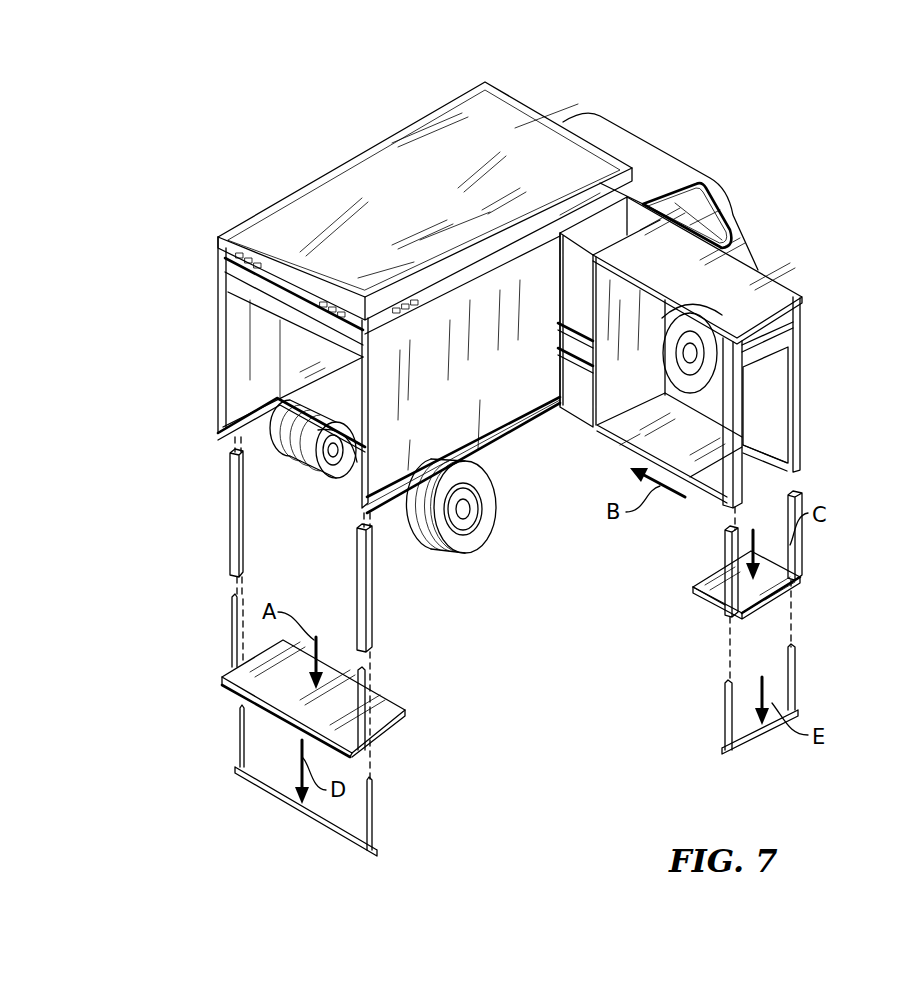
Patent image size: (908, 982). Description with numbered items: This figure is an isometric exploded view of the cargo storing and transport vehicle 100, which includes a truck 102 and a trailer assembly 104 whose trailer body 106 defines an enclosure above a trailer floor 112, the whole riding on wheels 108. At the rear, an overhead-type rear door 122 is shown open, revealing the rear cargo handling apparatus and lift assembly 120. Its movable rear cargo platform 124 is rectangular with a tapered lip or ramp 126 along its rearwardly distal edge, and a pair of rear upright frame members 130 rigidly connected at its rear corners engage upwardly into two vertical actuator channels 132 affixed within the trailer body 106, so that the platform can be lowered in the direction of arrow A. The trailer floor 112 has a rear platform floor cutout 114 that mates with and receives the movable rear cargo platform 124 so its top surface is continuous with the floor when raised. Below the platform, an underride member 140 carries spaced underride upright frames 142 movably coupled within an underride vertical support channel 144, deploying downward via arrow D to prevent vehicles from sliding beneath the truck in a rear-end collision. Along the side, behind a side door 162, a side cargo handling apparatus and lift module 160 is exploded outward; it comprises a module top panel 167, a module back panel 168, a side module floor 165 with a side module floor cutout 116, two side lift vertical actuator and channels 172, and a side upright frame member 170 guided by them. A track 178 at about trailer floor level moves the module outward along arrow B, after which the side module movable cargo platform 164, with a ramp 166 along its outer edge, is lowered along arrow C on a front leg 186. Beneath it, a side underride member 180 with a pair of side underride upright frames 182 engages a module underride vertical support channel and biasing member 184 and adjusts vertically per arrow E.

The cargo storing and transport vehicle 100 is at (752, 126).
The truck 102 is at (642, 150).
The trailer assembly 104 is at (213, 208).
The trailer body 106 is at (385, 182).
The wheel 108 is at (485, 520).
The trailer floor 112 is at (326, 392).
The rear platform floor cutout 114 is at (245, 421).
The side module floor cutout 116 is at (565, 342).
The rear cargo handling apparatus and lift assembly 120 is at (232, 686).
The rear door 122 is at (250, 300).
The movable rear cargo platform 124 is at (382, 697).
The tapered lip or ramp 126 is at (240, 702).
The rear upright frame members 130 is at (232, 630).
The vertical actuator channels 132 is at (231, 497).
The underride member 140 is at (287, 800).
The underride upright frames 142 is at (238, 758).
The underride vertical support channel 144 is at (245, 497).
The side cargo handling apparatus and lift module 160 is at (782, 597).
The side door 162 is at (798, 338).
The side module movable cargo platform 164 is at (720, 566).
The side module floor 165 is at (672, 437).
The ramp 166 is at (792, 635).
The module top panel 167 is at (760, 282).
The module back panel 168 is at (610, 373).
The side upright frame member 170 is at (800, 546).
The side lift vertical actuator and channels 172 is at (800, 405).
The track 178 is at (565, 317).
The side underride member 180 is at (730, 745).
The side underride upright frames 182 is at (725, 710).
The module underride vertical support channel and biasing member 184 is at (718, 600).
The compartment front leg 186 is at (717, 505).